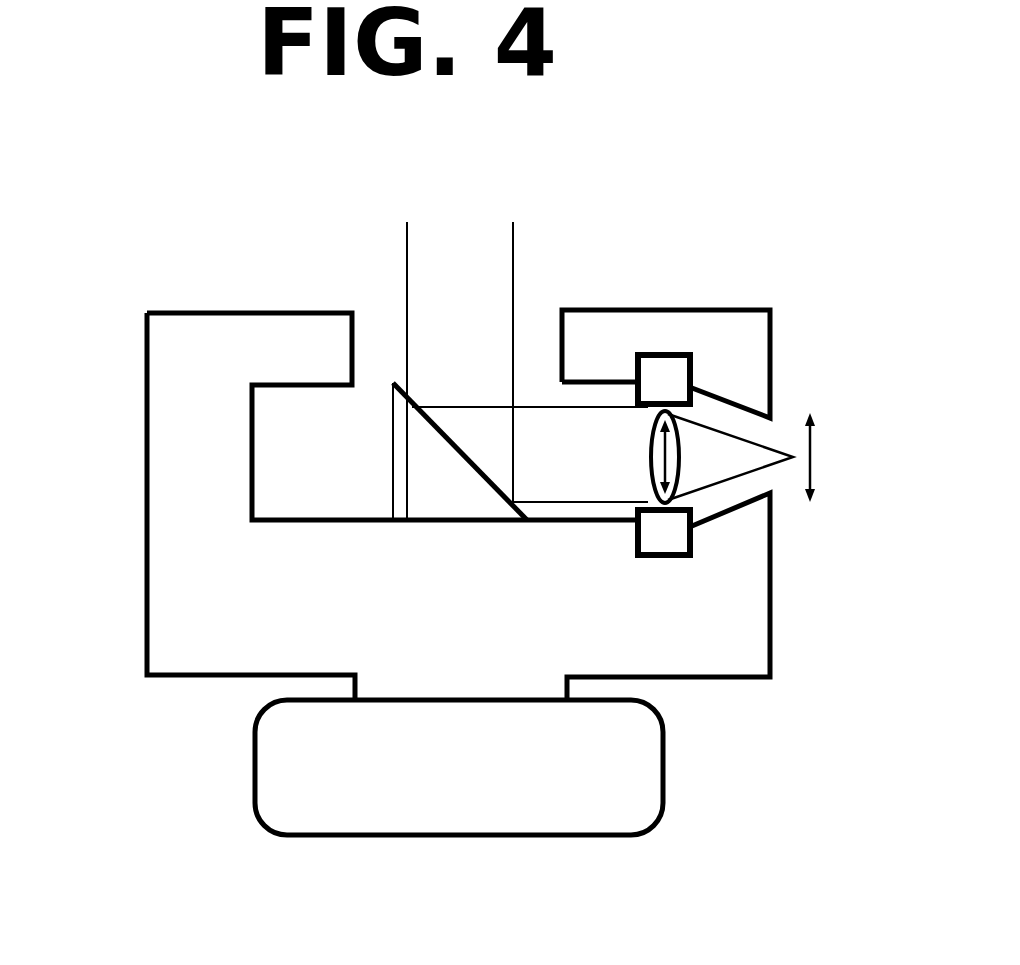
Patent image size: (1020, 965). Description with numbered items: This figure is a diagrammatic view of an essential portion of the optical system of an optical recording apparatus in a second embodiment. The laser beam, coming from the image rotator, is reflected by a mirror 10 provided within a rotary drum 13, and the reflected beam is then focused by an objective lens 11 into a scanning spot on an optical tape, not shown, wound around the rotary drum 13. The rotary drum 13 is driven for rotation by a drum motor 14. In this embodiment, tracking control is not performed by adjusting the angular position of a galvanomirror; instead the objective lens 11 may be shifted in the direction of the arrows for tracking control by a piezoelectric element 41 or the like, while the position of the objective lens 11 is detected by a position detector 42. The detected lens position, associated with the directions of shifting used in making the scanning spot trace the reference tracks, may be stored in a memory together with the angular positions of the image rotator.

The mirror 10 is at (420, 477).
The objective lens 11 is at (613, 455).
The rotary drum 13 is at (147, 490).
The drum motor 14 is at (255, 798).
The piezoelectric element 41 is at (668, 528).
The position detector 42 is at (668, 377).